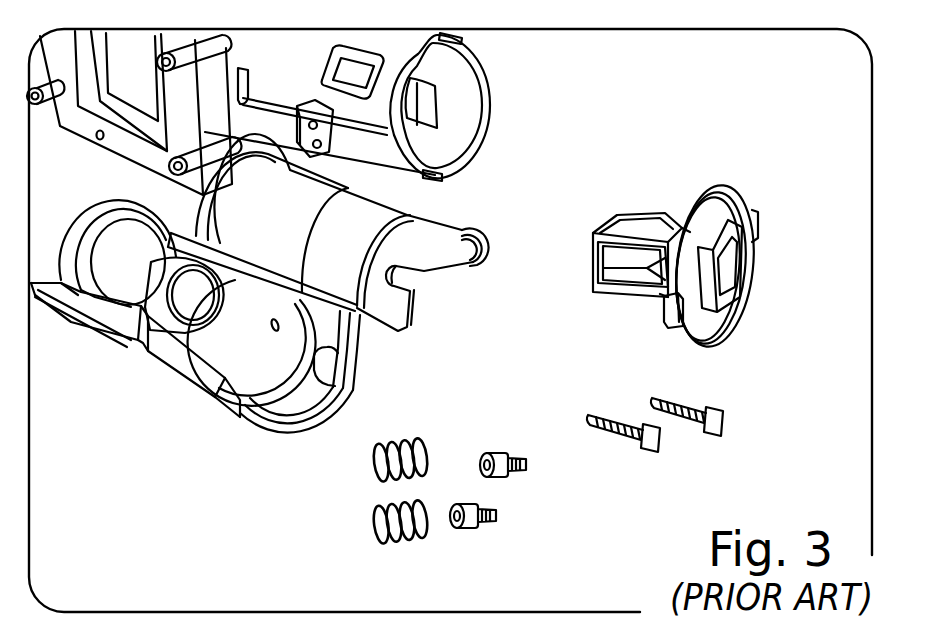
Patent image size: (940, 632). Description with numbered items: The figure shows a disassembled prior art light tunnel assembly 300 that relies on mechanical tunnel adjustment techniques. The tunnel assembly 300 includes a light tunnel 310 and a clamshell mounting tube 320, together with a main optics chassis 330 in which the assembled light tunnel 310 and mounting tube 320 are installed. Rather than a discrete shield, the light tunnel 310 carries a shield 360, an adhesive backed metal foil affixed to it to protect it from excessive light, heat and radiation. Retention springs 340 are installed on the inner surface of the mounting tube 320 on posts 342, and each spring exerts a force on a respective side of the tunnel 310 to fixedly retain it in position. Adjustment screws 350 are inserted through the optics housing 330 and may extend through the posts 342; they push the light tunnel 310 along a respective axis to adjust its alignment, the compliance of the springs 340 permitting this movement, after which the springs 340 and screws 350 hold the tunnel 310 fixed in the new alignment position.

The light tunnel assembly 300 is at (732, 92).
The light tunnel 310 is at (638, 229).
The clamshell mounting tube 320 is at (360, 338).
The main optics chassis 330 is at (403, 50).
The retention springs 340 is at (370, 507).
The posts 342 is at (499, 478).
The adjustment screws 350 is at (660, 443).
The shield 360 is at (737, 305).